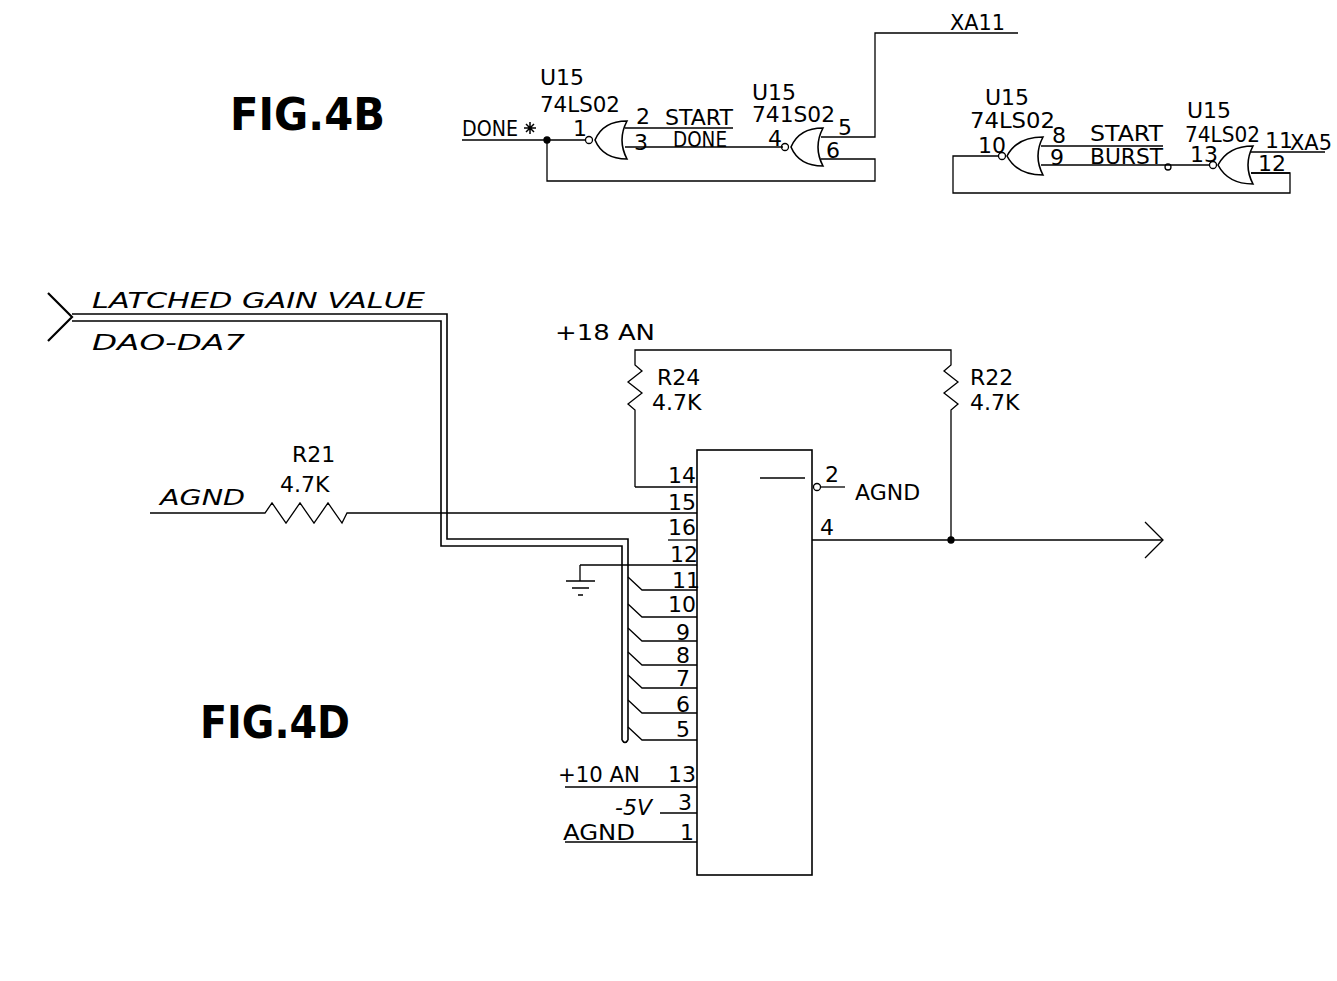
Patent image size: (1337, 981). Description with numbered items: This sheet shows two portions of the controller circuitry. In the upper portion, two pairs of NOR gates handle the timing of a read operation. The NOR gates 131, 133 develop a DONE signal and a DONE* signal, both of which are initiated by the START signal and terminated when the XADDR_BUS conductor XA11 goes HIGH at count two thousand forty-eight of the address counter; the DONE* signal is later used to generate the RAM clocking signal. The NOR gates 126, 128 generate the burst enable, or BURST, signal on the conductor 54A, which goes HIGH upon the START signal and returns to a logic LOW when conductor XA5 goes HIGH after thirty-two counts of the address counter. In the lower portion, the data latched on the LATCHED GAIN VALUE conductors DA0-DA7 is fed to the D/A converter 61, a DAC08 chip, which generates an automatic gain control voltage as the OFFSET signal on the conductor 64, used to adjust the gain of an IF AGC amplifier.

In FIG. 4B, the NOR gate 131 is at (622, 130).
In FIG. 4B, the NOR gate 133 is at (806, 163).
In FIG. 4B, the NOR gate 126 is at (1030, 162).
In FIG. 4B, the NOR gate 128 is at (1240, 173).
In FIG. 4B, the conductor 54A is at (1170, 164).
In FIG. 4D, the D/A converter 61 is at (1030, 428).
In FIG. 4D, the conductor 64 is at (1045, 540).